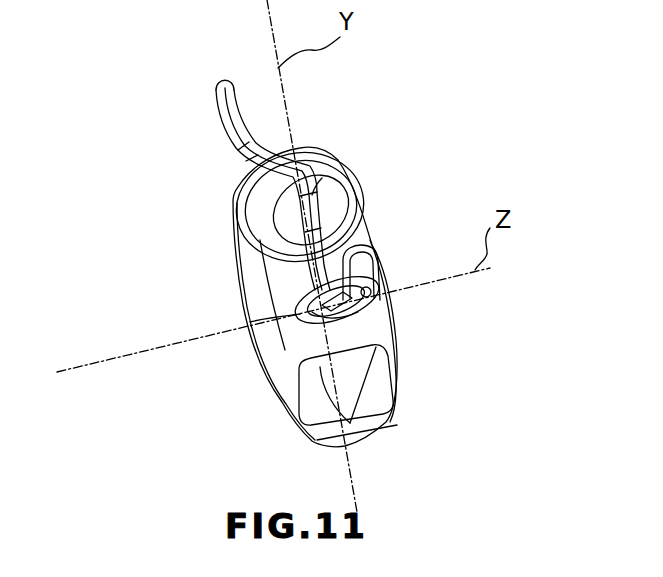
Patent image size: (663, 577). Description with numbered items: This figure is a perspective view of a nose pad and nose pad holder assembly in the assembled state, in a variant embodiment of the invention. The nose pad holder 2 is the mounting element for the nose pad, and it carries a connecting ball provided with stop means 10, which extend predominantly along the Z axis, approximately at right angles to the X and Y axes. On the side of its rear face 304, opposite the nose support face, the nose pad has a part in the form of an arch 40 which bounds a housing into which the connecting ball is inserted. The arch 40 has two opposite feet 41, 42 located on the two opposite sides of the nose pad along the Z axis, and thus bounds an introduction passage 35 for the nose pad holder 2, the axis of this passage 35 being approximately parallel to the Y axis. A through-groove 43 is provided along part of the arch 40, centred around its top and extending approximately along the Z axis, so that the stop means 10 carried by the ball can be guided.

The nose pad holder 2 is at (215, 90).
The stop means 10 is at (378, 310).
The introduction passage 35 is at (290, 242).
The rear face 304 is at (322, 178).
The arch 40 is at (297, 335).
The foot of the arch 41 is at (247, 272).
The foot of the arch 42 is at (380, 283).
The through-groove 43 is at (367, 250).